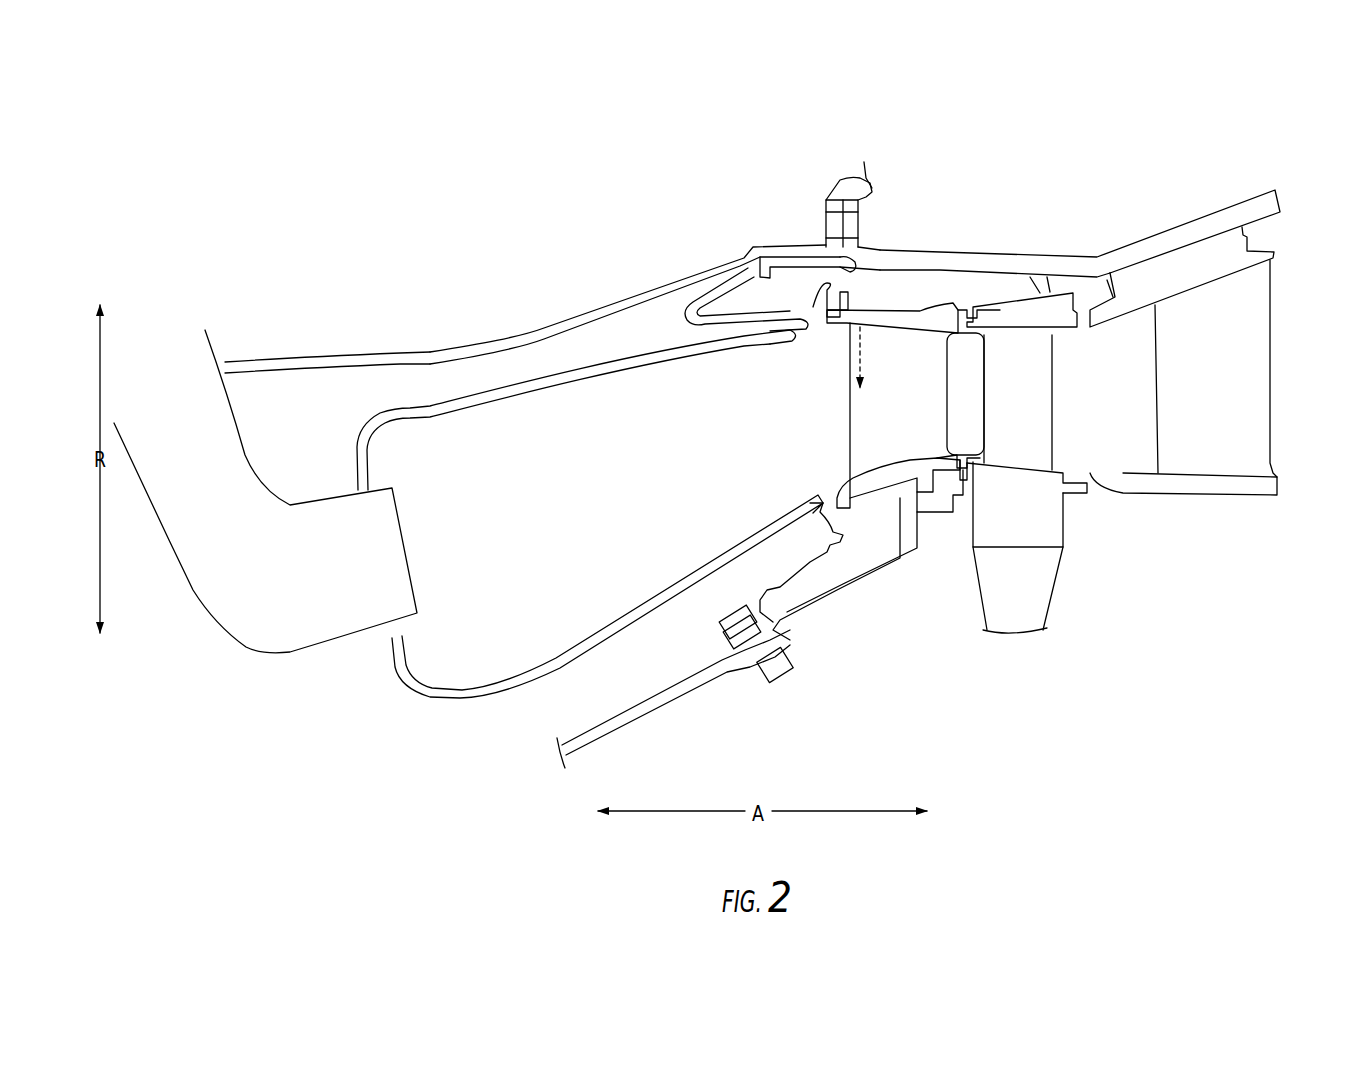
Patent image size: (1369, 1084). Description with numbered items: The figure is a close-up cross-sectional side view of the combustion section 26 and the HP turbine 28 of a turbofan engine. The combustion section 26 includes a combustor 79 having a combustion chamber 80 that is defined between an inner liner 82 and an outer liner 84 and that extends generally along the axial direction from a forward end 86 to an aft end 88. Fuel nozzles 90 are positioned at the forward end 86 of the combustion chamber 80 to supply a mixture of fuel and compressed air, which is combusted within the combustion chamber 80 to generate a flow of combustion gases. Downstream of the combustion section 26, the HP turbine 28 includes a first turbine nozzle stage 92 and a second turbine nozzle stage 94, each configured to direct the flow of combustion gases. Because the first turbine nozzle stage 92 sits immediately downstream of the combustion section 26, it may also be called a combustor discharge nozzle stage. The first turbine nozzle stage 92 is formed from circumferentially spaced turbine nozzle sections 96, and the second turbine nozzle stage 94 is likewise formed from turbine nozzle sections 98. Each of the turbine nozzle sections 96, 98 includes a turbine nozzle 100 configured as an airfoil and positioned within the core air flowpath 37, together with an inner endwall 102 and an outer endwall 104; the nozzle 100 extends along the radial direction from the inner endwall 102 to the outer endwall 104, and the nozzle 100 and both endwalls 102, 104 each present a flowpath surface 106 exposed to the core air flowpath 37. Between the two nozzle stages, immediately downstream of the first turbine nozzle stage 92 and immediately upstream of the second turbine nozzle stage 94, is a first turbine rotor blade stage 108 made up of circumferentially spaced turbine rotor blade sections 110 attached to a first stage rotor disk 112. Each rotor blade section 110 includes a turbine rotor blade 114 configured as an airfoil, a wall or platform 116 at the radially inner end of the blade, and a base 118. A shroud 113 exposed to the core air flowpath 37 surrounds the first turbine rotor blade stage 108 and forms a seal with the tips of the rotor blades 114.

The combustion section 26 is at (540, 282).
The HP turbine 28 is at (1035, 238).
The core air flowpath 37 is at (1086, 403).
The combustor 79 is at (430, 382).
The combustion chamber 80 is at (526, 531).
The inner liner 82 is at (553, 662).
The outer liner 84 is at (478, 405).
The forward end 86 is at (363, 685).
The aft end 88 is at (770, 388).
The fuel nozzles 90 is at (286, 534).
The first turbine nozzle stage 92 is at (893, 292).
The second turbine nozzle stage 94 is at (1233, 210).
The turbine nozzle sections 96 is at (837, 382).
The turbine nozzle sections 98 is at (1290, 372).
The turbine nozzle 100 is at (393, 243).
The inner endwall 102 is at (873, 480).
The outer endwall 104 is at (873, 307).
The flowpath surface 106 is at (878, 402).
The first turbine rotor blade stage 108 is at (1023, 350).
The turbine rotor blade sections 110 is at (1058, 380).
The first stage rotor disk 112 is at (1030, 595).
The shroud 113 is at (1013, 303).
The turbine rotor blade 114 is at (1003, 387).
The platform 116 is at (1025, 463).
The base 118 is at (960, 510).